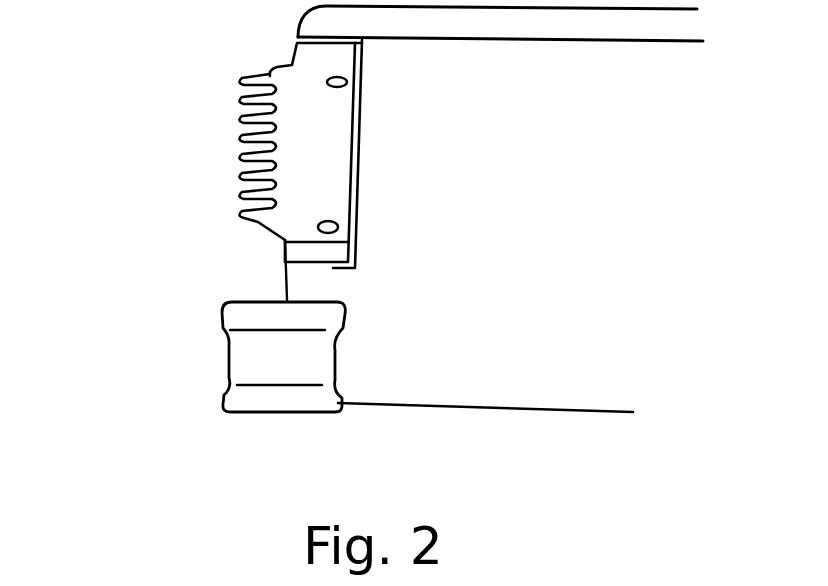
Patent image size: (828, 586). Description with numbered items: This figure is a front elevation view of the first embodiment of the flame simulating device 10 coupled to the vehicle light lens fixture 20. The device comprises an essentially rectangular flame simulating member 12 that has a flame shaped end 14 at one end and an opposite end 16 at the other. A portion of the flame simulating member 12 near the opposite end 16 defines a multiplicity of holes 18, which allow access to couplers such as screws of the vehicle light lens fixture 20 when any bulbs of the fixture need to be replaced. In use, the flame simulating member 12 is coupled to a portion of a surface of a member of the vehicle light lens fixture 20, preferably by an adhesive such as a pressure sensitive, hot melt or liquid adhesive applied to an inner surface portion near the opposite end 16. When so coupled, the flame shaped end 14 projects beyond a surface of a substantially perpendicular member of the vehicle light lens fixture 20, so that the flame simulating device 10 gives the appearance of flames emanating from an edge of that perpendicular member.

The flame simulating device 10 is at (216, 97).
The essentially rectangular flame simulating member 12 is at (327, 163).
The flame shaped end 14 is at (245, 150).
The opposite end 16 is at (355, 193).
The holes 18 is at (348, 85).
The vehicle light lens fixture 20 is at (300, 247).